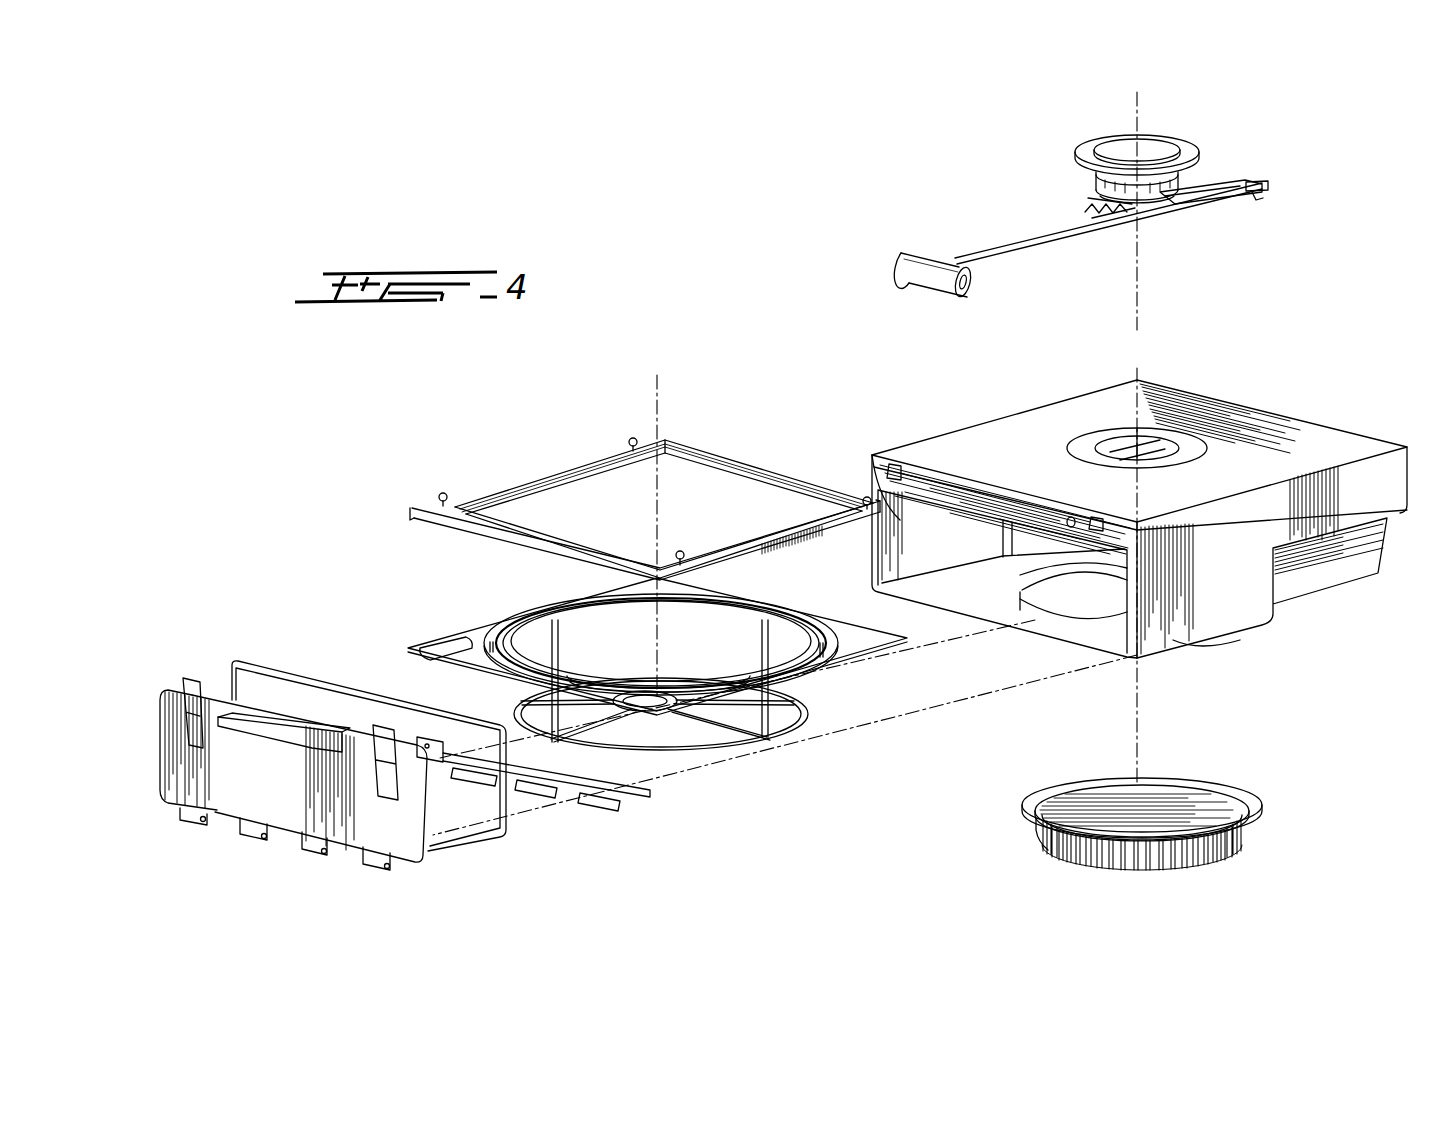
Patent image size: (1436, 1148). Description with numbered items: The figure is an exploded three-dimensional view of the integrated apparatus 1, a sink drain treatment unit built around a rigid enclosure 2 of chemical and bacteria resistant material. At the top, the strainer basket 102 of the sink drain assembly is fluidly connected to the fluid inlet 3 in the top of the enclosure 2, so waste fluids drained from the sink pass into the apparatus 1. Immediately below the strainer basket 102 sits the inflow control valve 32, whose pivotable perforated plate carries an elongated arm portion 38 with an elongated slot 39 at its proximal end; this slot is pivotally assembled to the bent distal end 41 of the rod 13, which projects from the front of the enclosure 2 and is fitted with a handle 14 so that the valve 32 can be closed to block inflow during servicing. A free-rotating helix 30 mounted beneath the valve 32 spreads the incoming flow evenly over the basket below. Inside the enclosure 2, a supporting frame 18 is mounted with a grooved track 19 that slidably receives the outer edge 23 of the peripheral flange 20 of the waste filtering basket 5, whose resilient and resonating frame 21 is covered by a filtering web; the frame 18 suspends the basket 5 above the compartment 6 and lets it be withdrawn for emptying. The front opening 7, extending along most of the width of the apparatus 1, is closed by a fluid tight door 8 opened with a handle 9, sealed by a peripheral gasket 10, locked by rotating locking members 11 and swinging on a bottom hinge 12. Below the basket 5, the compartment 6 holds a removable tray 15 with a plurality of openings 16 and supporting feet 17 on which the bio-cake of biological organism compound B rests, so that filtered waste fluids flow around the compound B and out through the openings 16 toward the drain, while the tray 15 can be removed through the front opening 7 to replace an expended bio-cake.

The integrated apparatus 1 is at (812, 320).
The rigid enclosure 2 is at (1105, 540).
The fluid inlet 3 is at (1148, 444).
The waste filtering basket 5 is at (432, 672).
The compartment 6 is at (1030, 540).
The front opening 7 is at (872, 480).
The fluid tight door 8 is at (291, 804).
The handle 9 is at (236, 710).
The peripheral gasket 10 is at (503, 839).
The locking members 11 is at (183, 825).
The bottom hinge 12 is at (626, 818).
The rod 13 is at (1050, 243).
The handle 14 is at (930, 278).
The removable tray 15 is at (1168, 805).
The openings 16 is at (1200, 866).
The supporting feet 17 is at (1042, 848).
The supporting frame 18 is at (550, 470).
The grooved track 19 is at (410, 514).
The peripheral flange 20 is at (635, 686).
The resilient and resonating frame 21 is at (795, 720).
The outer edge 23 is at (540, 605).
The free-rotating helix 30 is at (1088, 206).
The inflow control valve 32 is at (1134, 215).
The elongated arm portion 38 is at (1202, 186).
The elongated slot 39 is at (1265, 196).
The bent distal end 41 is at (1252, 205).
The strainer basket 102 is at (1118, 148).
The biological organism compound B is at (1262, 800).